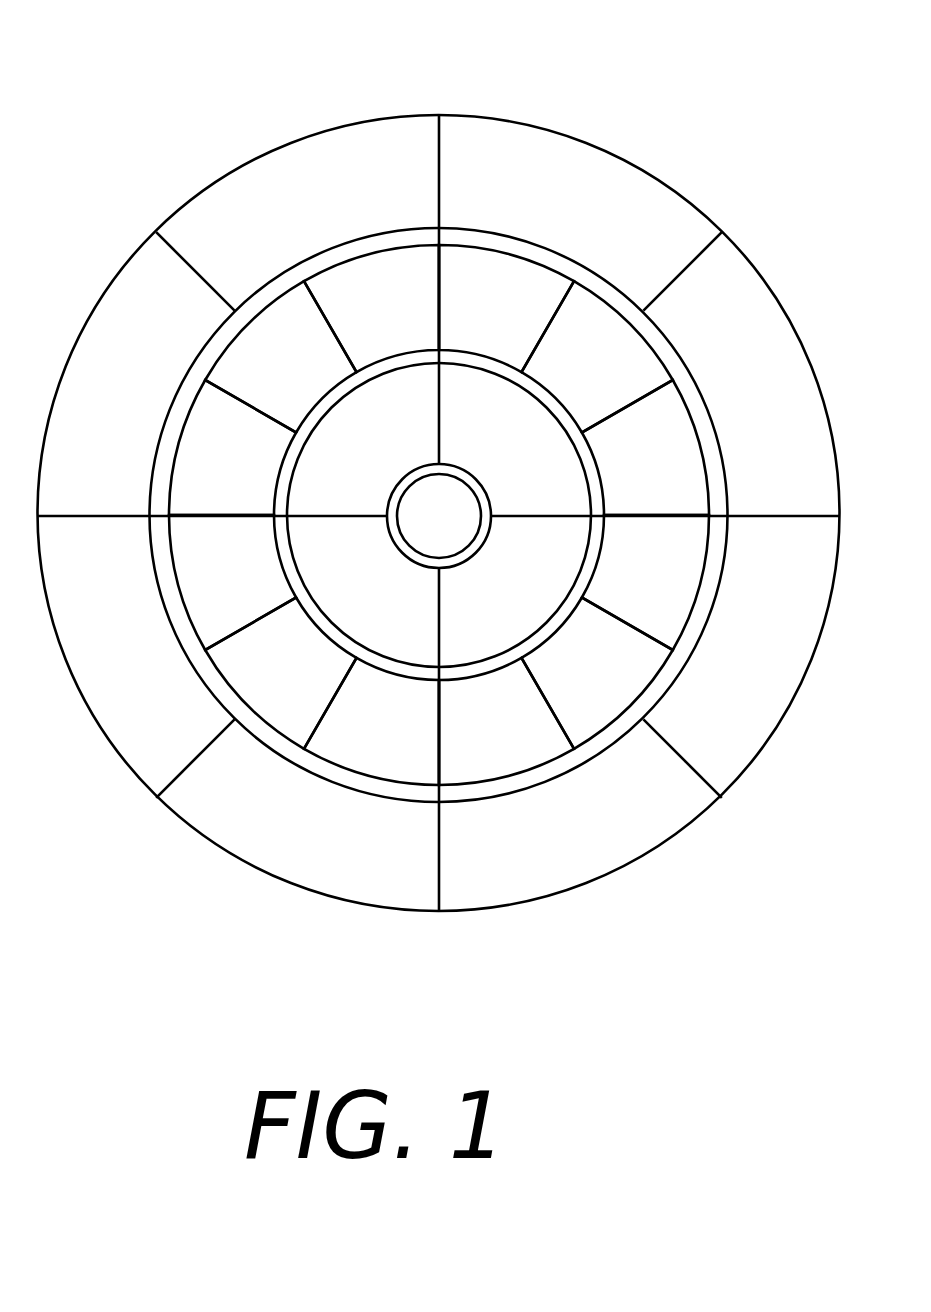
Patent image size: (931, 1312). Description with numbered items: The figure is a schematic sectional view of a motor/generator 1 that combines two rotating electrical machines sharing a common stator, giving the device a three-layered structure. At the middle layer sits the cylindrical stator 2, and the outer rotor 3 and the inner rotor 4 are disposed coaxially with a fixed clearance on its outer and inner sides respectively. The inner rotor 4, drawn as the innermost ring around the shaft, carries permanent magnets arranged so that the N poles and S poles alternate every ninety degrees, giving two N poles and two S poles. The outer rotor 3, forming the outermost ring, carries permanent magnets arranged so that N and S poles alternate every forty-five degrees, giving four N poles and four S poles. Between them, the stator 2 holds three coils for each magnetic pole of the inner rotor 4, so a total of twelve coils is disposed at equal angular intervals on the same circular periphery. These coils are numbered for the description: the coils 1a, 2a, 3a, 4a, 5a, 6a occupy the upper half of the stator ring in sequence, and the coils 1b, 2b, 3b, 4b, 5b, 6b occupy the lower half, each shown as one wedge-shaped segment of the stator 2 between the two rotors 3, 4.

The stator 1 is at (613, 177).
The stator 2 is at (439, 404).
The outer rotor 3 is at (353, 182).
The inner rotor 4 is at (388, 418).
The coil # 1a is at (232, 447).
The coil # 2a is at (280, 356).
The coil # 3a is at (371, 308).
The coil # 4a is at (506, 308).
The coil # 5a is at (597, 356).
The coil # 6a is at (645, 447).
The coil # 1b is at (645, 582).
The coil # 2b is at (597, 673).
The coil # 3b is at (506, 721).
The coil # 4b is at (371, 721).
The coil # 5b is at (280, 673).
The coil # 6b is at (232, 582).